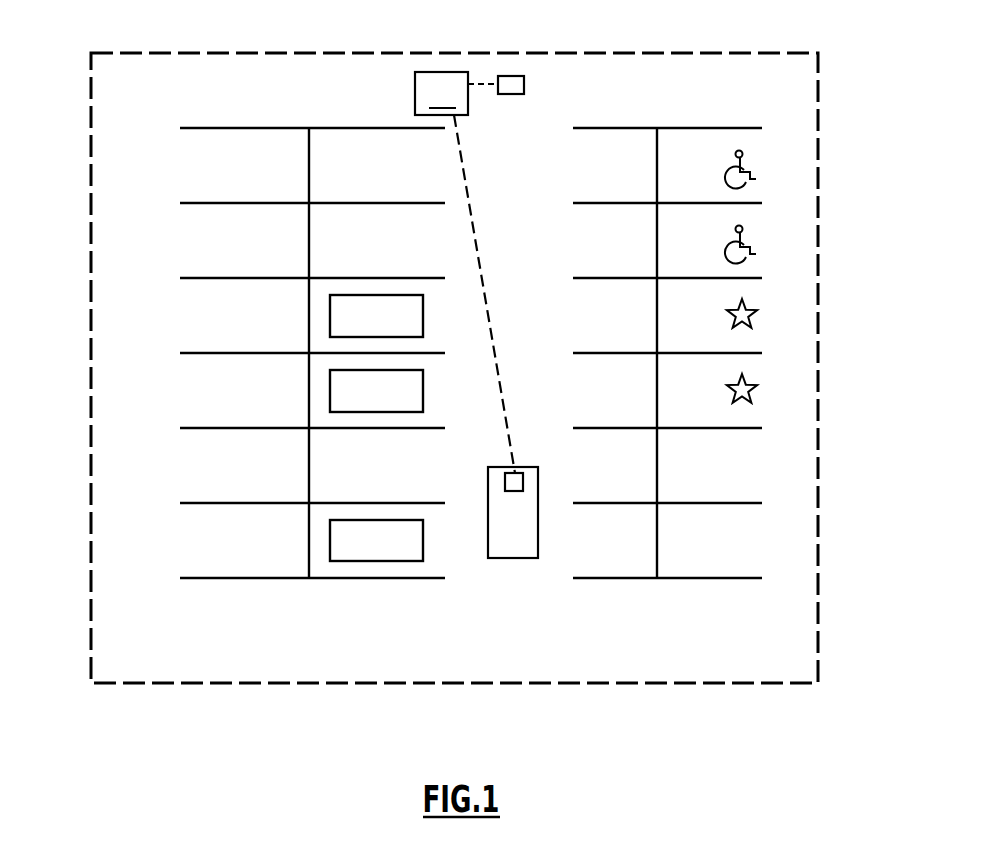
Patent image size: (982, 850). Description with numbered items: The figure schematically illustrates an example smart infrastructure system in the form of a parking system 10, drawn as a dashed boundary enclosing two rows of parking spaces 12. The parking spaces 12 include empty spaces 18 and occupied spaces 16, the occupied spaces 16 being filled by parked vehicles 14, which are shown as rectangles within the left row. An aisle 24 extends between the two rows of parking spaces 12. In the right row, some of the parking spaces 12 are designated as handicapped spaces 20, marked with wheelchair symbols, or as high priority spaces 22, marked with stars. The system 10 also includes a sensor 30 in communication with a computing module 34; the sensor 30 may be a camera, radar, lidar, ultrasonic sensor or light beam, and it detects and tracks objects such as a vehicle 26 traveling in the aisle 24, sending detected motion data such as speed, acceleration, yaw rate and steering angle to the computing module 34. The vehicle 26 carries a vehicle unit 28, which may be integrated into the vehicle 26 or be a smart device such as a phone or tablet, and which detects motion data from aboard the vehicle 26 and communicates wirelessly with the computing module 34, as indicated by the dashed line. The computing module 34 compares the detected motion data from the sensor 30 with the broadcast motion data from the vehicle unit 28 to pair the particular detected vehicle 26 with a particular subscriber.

The parking system 10 is at (694, 52).
The parking spaces 12 is at (238, 388).
The parked vehicles 14 is at (374, 545).
The occupied spaces 16 is at (388, 568).
The empty spaces 18 is at (263, 555).
The handicapped spaces 20 is at (760, 163).
The high priority spaces 22 is at (758, 318).
The aisle 24 is at (520, 155).
The vehicle 26 is at (516, 544).
The vehicle unit 28 is at (507, 492).
The sensor 30 is at (508, 76).
The computing module 34 is at (465, 272).